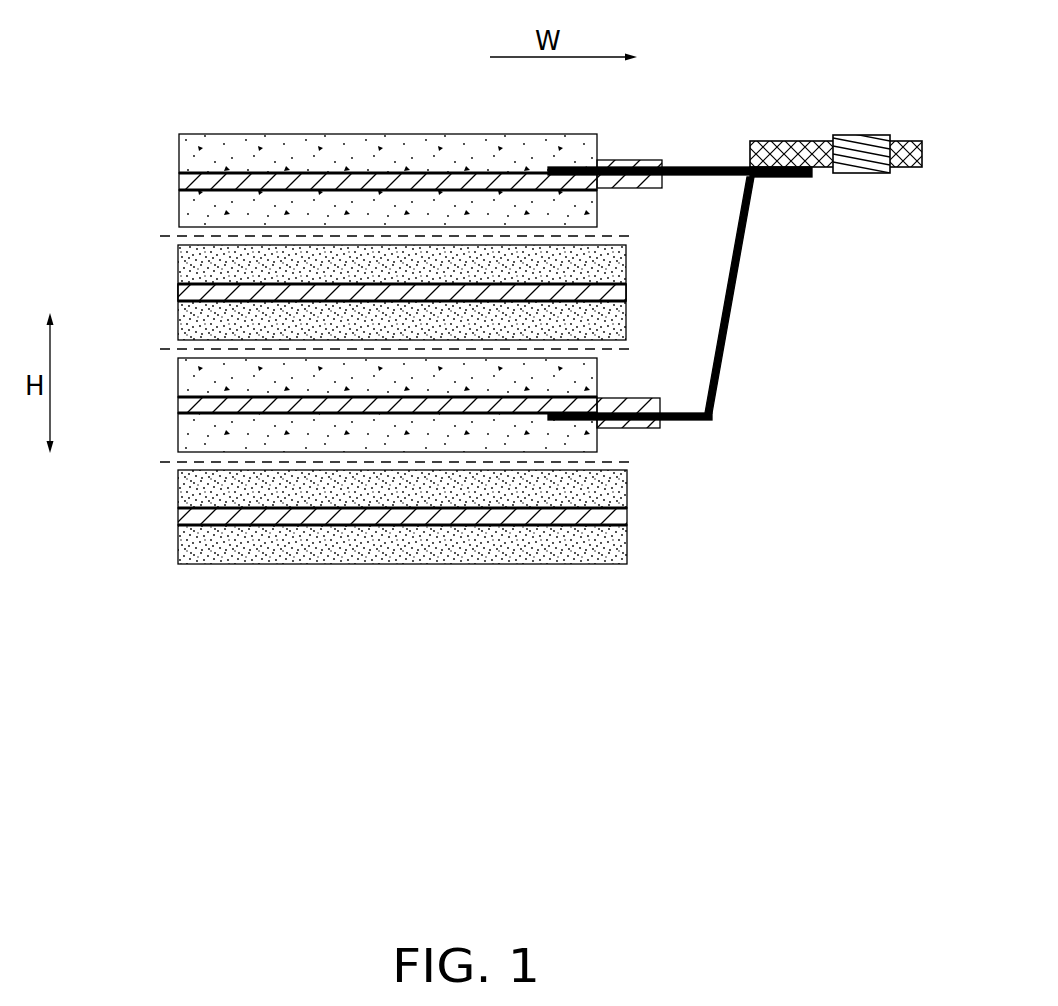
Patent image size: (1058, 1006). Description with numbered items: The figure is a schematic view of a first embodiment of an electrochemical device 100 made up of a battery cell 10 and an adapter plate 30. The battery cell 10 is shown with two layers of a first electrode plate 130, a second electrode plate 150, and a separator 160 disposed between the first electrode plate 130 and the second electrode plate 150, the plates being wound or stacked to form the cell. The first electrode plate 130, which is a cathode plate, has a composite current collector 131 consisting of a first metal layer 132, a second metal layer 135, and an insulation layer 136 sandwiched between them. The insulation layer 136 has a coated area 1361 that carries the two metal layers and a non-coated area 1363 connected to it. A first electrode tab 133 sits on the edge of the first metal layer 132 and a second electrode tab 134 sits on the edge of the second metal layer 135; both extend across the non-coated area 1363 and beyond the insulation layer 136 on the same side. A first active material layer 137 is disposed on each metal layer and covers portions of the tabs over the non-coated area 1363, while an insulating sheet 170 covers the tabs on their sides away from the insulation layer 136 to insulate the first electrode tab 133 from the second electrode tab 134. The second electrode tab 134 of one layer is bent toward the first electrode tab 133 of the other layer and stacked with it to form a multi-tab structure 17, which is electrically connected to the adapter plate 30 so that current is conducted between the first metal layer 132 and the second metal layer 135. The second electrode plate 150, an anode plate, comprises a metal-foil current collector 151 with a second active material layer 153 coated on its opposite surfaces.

The electrochemical device 100 is at (388, 30).
The battery cell 10 is at (359, 582).
The first electrode plate 130 is at (261, 130).
The composite current collector 131 is at (97, 140).
The first metal layer 132 is at (210, 172).
The insulation layer 136 is at (210, 181).
The second metal layer 135 is at (212, 192).
The first active material layer 137 is at (284, 148).
The coated area 1361 is at (374, 180).
The first electrode tab 133 is at (580, 167).
The non-coated area 1363 is at (608, 176).
The insulating sheet 170 is at (635, 160).
The second electrode tab 134 is at (635, 428).
The separator 160 is at (175, 462).
The second electrode plate 150 is at (93, 493).
The second active material layer 153 is at (190, 497).
The current collector 151 is at (196, 522).
The adapter plate 30 is at (777, 140).
The multi-tab structure 17 is at (783, 175).